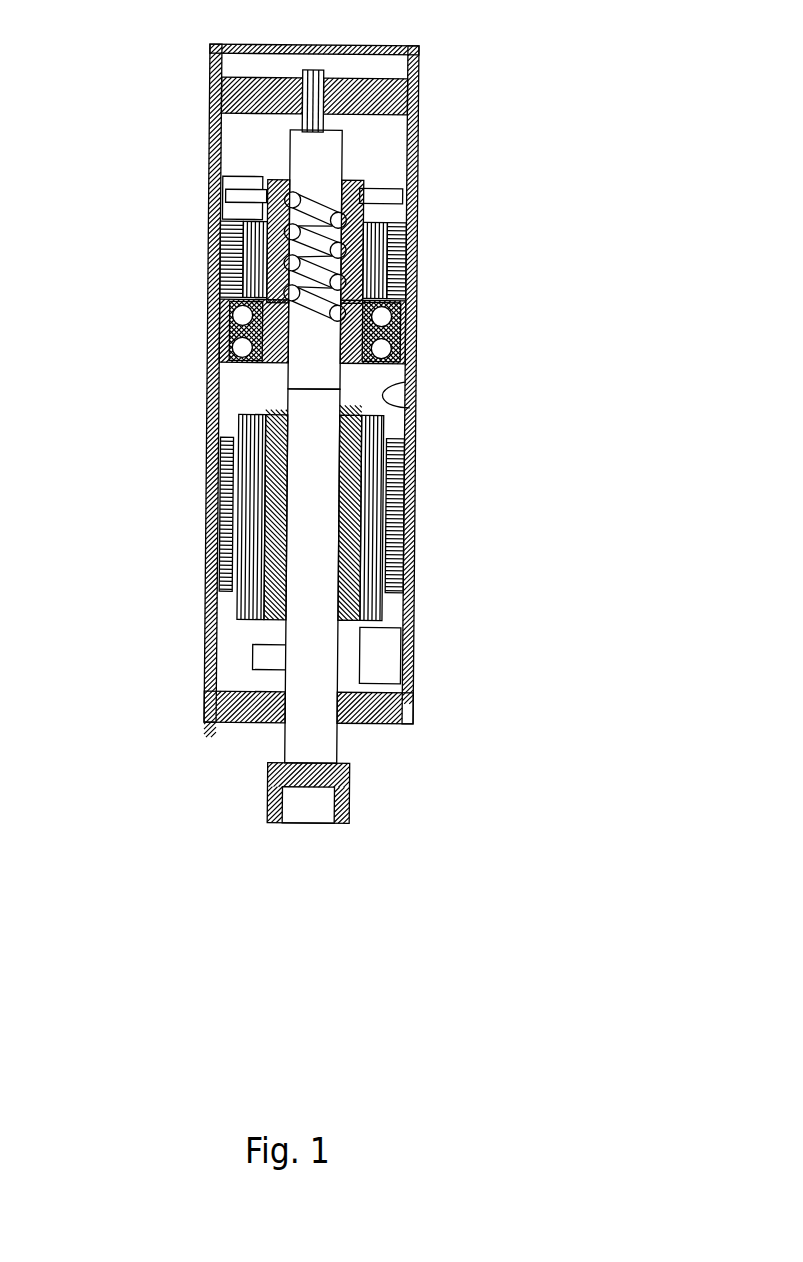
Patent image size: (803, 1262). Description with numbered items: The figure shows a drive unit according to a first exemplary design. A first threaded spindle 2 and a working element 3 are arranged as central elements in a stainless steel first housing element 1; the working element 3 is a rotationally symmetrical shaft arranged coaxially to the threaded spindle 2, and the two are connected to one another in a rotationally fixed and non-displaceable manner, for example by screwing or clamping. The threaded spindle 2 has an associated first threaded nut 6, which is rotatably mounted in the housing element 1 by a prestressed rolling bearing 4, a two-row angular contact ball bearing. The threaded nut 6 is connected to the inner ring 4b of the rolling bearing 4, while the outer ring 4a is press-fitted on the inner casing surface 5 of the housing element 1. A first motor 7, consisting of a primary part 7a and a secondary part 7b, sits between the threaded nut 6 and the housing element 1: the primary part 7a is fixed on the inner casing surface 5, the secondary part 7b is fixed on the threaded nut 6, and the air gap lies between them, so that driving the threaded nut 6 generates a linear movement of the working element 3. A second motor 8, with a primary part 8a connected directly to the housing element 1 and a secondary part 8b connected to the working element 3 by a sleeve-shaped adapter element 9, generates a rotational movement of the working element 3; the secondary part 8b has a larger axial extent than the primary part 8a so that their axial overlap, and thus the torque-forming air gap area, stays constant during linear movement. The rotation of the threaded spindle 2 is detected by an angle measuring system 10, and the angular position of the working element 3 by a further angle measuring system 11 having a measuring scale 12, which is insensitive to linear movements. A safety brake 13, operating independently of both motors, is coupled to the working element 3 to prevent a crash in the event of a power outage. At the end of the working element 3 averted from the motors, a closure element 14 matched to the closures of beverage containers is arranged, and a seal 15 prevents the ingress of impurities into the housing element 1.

The first housing element 1 is at (332, 48).
The first threaded spindle 2 is at (309, 151).
The working element 3 is at (310, 649).
The rolling bearing 4 is at (316, 323).
The outer ring 4a is at (393, 355).
The inner ring 4b is at (373, 325).
The inner casing surface 5 is at (410, 407).
The first threaded nut 6 is at (276, 217).
The first motor 7 is at (232, 254).
The primary part 7a is at (231, 287).
The secondary part 7b is at (258, 253).
The second motor 8 is at (233, 517).
The primary part 8a is at (226, 537).
The secondary part 8b is at (254, 498).
The adapter element 9 is at (346, 550).
The angle measuring system 10 is at (247, 187).
The further angle measuring system 11 is at (280, 78).
The measuring scale 12 is at (316, 98).
The safety brake 13 is at (382, 649).
The closure element 14 is at (306, 803).
The seal 15 is at (286, 710).